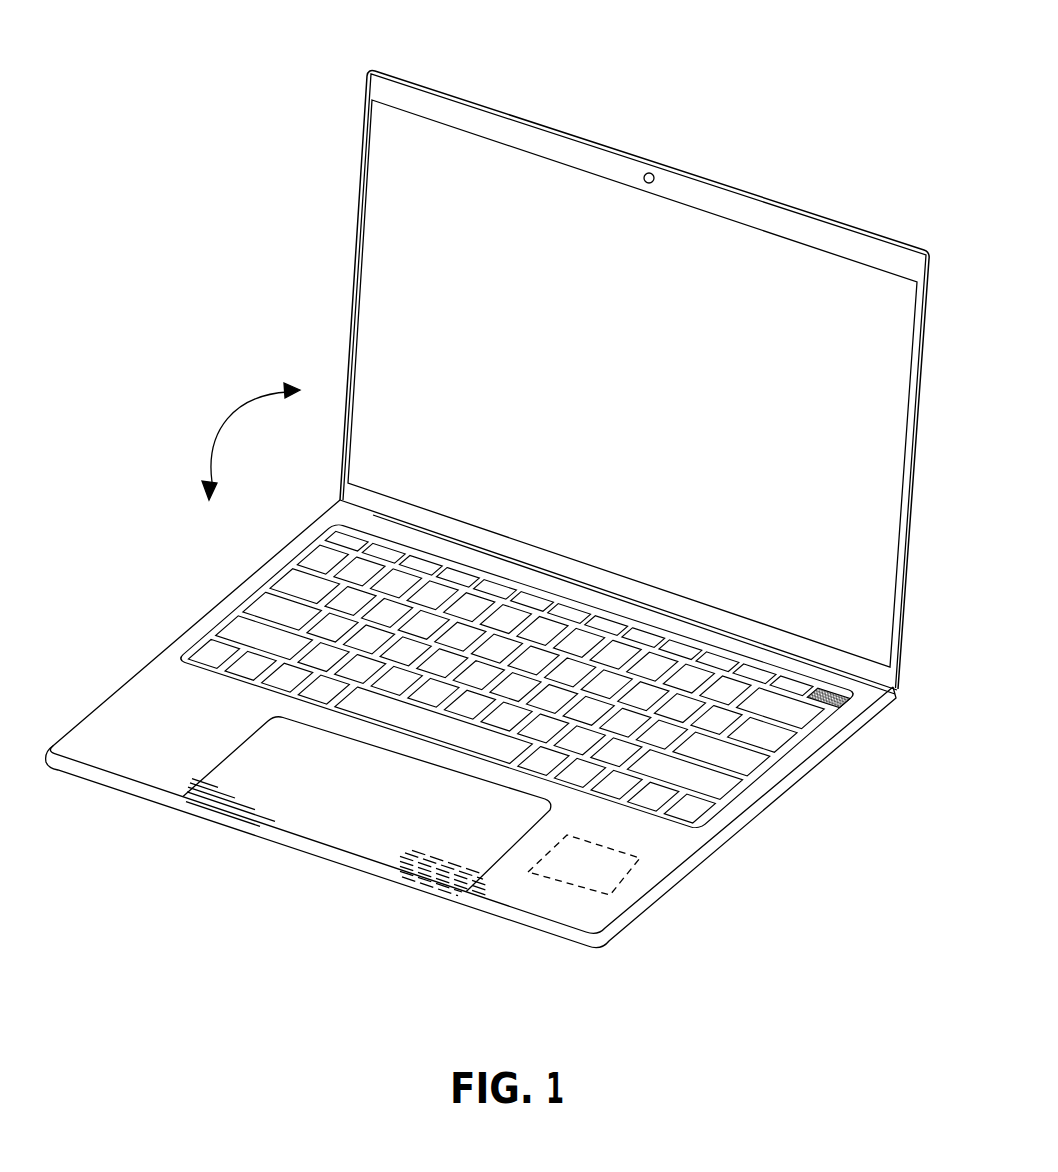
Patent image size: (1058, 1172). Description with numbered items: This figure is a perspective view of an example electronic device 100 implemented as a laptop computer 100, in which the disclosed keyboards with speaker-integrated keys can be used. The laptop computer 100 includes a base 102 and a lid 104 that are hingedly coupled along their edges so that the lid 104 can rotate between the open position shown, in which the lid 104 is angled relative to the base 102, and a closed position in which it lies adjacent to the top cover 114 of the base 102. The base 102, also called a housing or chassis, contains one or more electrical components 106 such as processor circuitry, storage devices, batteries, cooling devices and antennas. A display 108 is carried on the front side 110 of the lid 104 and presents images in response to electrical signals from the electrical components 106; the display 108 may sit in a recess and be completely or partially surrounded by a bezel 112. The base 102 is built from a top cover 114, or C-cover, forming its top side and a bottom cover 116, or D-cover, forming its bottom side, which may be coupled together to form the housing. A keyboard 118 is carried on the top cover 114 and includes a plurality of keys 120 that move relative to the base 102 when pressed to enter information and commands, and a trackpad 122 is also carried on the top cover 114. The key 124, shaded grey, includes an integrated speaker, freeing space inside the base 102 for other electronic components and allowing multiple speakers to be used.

The electronic device 100 is at (804, 92).
The base 102 is at (157, 675).
The lid 104 is at (351, 357).
The electrical components 106 is at (647, 858).
The display 108 is at (385, 302).
The front side 110 is at (360, 235).
The bezel 112 is at (576, 150).
The top cover 114 is at (113, 713).
The bottom cover 116 is at (97, 788).
The keyboard 118 is at (264, 567).
The keys 120 is at (327, 560).
The trackpad 122 is at (263, 753).
The key with integrated speaker 124 is at (832, 690).